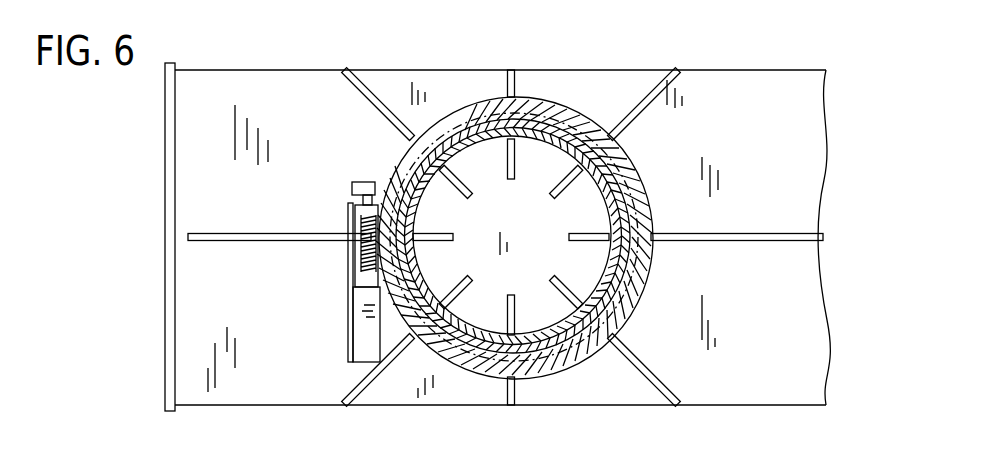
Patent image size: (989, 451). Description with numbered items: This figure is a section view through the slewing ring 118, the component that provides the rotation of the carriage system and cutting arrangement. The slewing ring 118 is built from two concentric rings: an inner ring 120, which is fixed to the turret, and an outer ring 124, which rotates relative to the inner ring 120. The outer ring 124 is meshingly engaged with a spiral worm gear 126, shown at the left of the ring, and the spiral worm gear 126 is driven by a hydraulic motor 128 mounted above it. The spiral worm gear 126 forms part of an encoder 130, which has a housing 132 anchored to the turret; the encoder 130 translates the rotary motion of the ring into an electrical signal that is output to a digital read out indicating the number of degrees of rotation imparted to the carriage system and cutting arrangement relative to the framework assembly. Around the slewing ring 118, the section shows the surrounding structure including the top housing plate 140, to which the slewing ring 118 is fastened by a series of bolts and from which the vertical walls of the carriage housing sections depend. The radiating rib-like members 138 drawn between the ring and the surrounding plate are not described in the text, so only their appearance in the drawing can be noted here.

The slewing ring 118 is at (682, 197).
The inner ring 120 is at (604, 198).
The outer ring 124 is at (625, 288).
The spiral worm gear 126 is at (355, 214).
The hydraulic motor 128 is at (365, 184).
The encoder 130 is at (358, 352).
The housing 132 is at (348, 283).
The ribs 138 is at (508, 74).
The top housing plate 140 is at (812, 167).